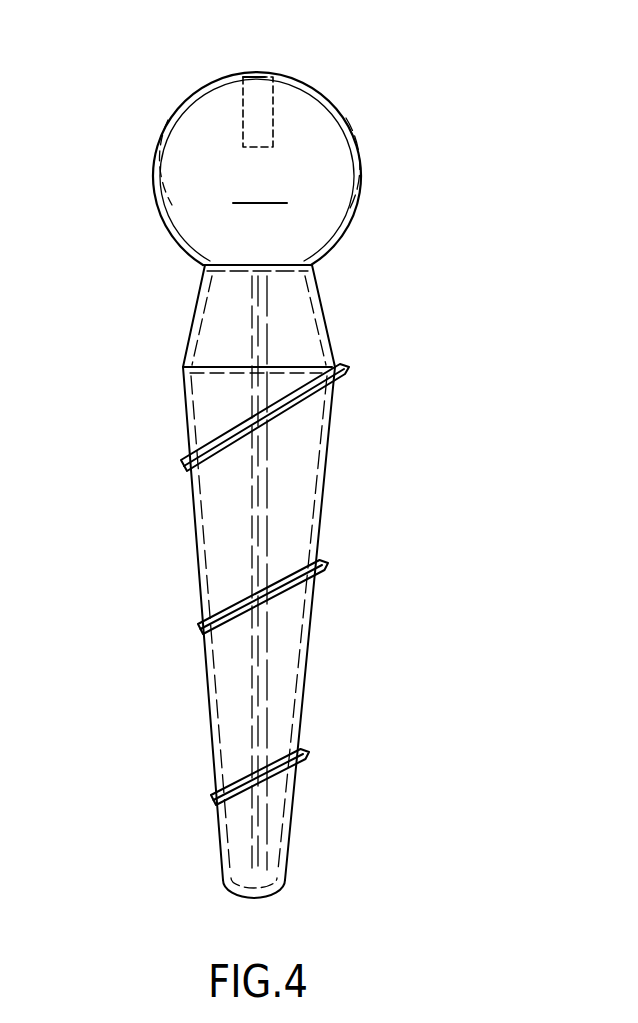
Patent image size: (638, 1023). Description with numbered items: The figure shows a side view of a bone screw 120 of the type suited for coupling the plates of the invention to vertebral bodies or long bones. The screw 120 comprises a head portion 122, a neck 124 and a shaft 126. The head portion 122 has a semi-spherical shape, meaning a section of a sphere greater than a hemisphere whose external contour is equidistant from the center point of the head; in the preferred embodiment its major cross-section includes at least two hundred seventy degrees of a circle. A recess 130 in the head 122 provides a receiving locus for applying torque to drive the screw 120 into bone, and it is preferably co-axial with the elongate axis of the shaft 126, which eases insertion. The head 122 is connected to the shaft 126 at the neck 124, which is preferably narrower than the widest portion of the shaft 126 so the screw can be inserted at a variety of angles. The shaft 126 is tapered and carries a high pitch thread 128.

The screw 120 is at (264, 451).
The head portion 122 is at (257, 134).
The neck 124 is at (323, 311).
The shaft 126 is at (320, 543).
The high pitch thread 128 is at (182, 466).
The recess 130 is at (268, 72).